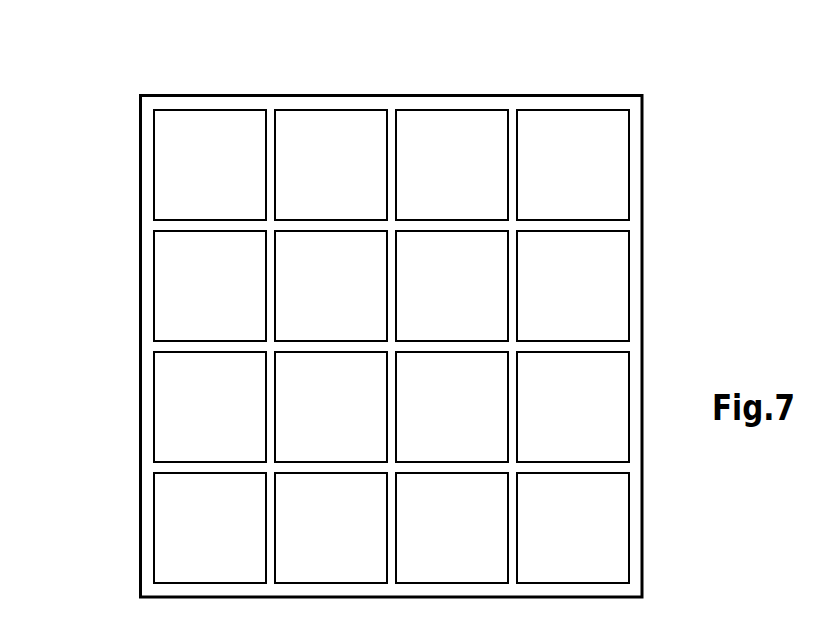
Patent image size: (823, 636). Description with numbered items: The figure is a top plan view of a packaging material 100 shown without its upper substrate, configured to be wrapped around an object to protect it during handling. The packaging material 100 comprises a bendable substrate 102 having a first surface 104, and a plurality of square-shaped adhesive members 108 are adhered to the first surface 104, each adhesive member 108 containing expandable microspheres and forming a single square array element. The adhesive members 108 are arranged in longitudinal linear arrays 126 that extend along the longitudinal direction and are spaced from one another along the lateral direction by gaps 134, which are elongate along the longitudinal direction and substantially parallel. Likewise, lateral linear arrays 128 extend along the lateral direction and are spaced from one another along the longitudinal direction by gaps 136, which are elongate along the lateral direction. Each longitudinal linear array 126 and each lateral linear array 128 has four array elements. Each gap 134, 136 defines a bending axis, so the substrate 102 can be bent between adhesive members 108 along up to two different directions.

The packaging material 100 is at (135, 80).
The bendable substrate 102 is at (632, 121).
The first surface 104 is at (633, 156).
The adhesive member 108 is at (170, 143).
The longitudinal linear array 126 is at (212, 87).
The lateral linear array 128 is at (132, 162).
The gap 134 is at (269, 103).
The gap 136 is at (148, 225).